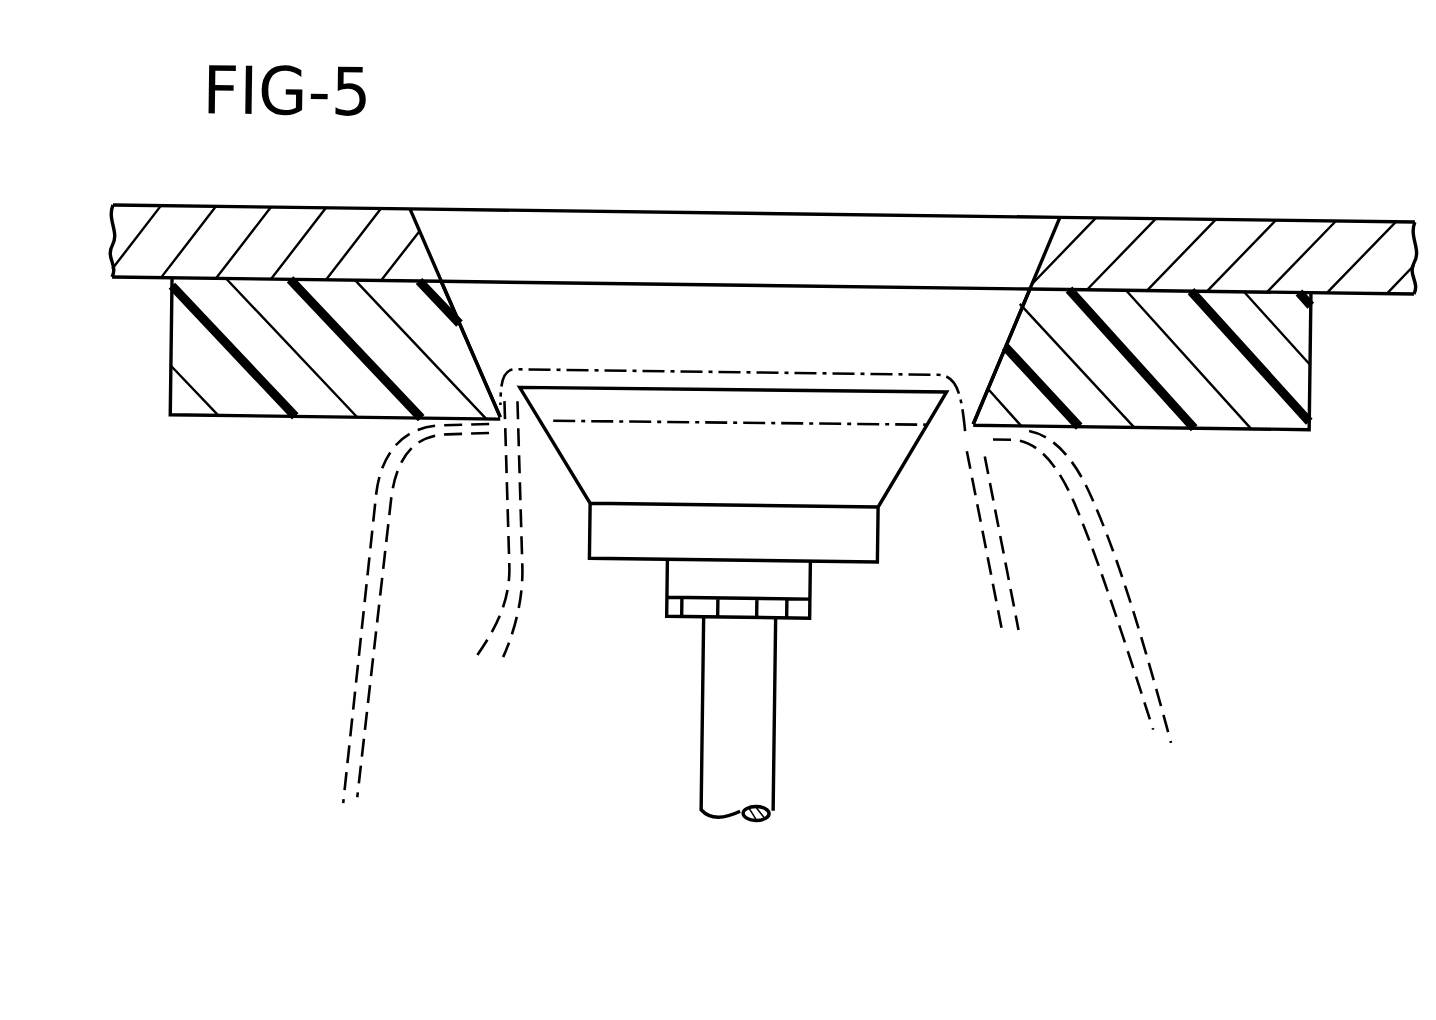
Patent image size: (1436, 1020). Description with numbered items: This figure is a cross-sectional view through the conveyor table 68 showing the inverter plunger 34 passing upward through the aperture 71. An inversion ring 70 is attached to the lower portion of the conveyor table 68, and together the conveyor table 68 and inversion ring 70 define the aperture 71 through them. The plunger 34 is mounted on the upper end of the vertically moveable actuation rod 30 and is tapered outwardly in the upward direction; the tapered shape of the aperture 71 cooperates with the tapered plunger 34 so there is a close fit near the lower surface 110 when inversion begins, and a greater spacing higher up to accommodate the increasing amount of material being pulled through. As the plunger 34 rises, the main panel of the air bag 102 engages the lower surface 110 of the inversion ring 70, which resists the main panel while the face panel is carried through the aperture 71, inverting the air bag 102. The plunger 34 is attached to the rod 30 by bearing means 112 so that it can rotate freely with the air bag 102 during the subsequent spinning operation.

The actuation rod 30 is at (710, 683).
The inverter plunger 34 is at (897, 465).
The conveyor table 68 is at (1130, 217).
The inversion ring 70 is at (1164, 416).
The aperture 71 is at (535, 217).
The air bag 102 is at (383, 635).
The lower surface 110 is at (256, 415).
The bearing means 112 is at (672, 577).